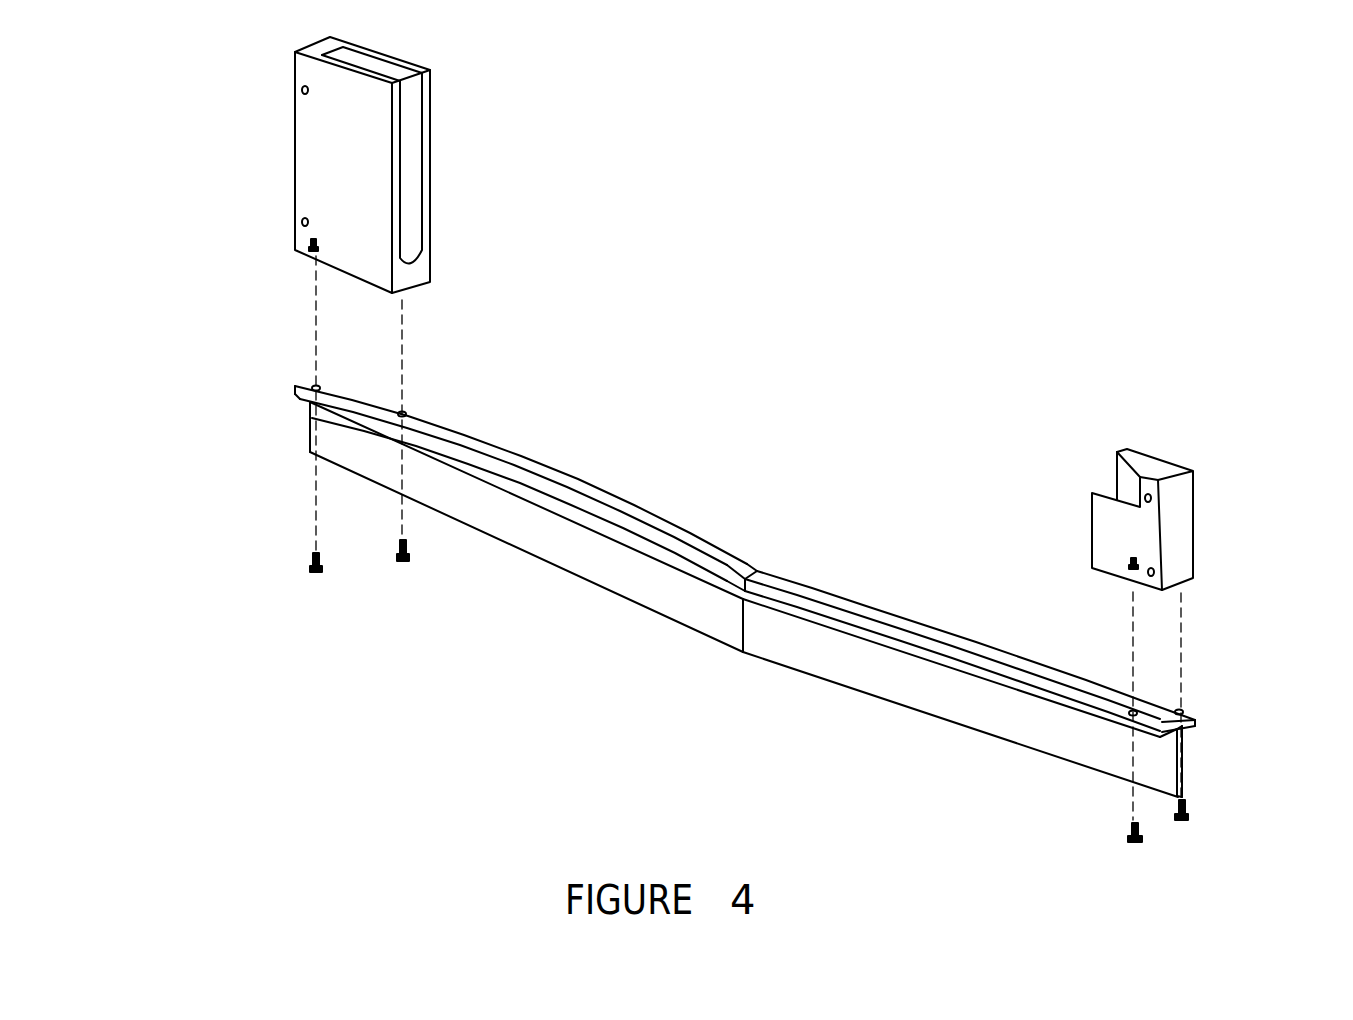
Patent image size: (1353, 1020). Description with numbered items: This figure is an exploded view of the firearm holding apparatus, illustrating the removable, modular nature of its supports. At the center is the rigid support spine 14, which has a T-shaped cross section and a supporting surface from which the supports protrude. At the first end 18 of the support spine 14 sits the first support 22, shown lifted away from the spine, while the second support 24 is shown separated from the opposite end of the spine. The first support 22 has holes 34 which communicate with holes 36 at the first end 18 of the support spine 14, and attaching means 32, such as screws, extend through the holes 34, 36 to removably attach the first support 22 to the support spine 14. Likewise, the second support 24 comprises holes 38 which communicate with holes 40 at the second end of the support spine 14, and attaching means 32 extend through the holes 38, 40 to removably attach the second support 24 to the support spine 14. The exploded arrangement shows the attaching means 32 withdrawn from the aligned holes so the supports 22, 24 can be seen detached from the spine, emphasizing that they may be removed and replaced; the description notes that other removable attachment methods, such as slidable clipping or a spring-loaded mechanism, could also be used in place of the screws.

The support spine 14 is at (600, 505).
The first end 18 is at (350, 402).
The first support 22 is at (330, 135).
The second support 24 is at (1185, 512).
The attaching means 32 is at (397, 563).
The holes 34 is at (310, 253).
The holes 36 is at (316, 384).
The holes 38 is at (1130, 568).
The holes 40 is at (1188, 727).